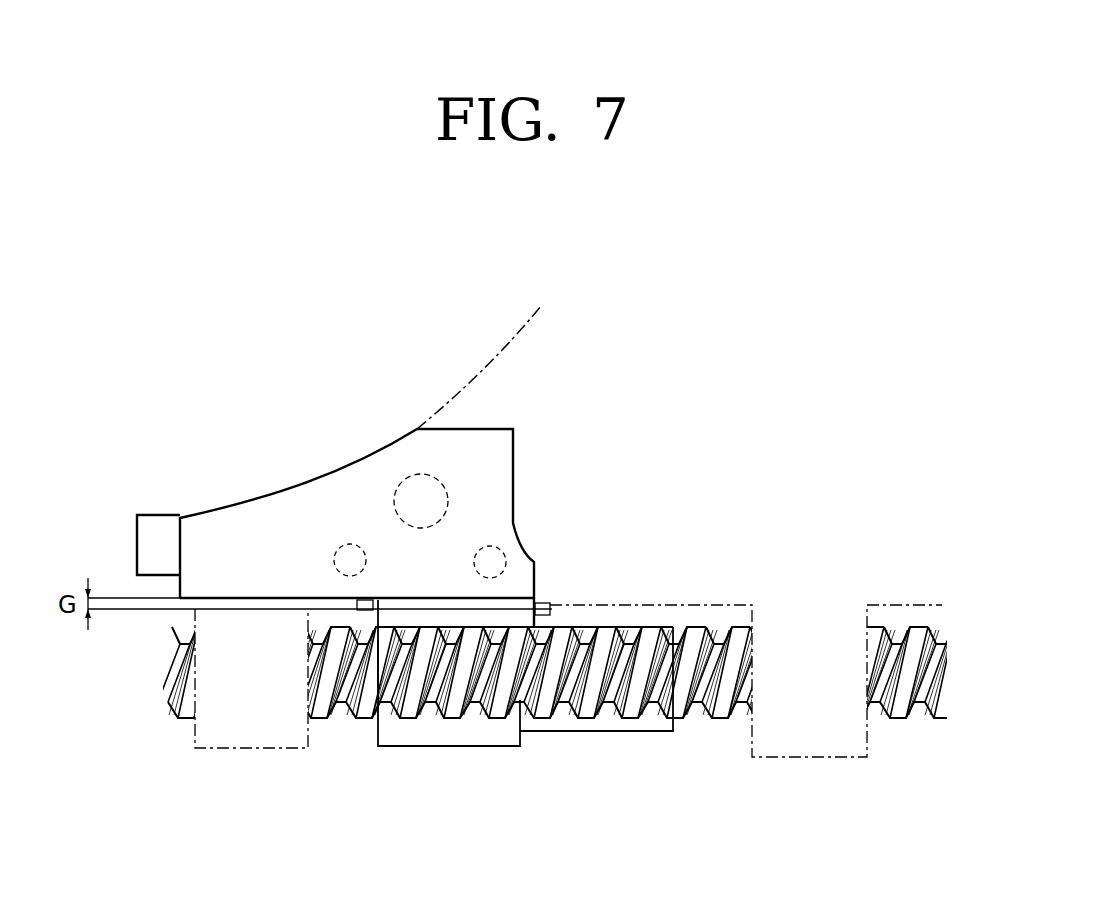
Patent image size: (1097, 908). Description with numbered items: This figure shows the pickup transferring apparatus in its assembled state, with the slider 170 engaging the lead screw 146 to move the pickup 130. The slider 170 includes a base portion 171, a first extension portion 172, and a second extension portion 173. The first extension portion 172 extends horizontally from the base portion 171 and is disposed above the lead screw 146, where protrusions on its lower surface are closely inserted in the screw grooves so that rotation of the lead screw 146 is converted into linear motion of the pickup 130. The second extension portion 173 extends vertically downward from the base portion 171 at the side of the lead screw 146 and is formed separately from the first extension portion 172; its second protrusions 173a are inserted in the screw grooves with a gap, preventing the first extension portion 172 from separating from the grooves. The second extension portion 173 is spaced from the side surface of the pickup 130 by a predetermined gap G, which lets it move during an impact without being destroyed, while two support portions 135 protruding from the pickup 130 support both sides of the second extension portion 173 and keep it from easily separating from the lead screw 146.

The pickup 130 is at (760, 569).
The support portions 135 is at (550, 605).
The lead screw 146 is at (713, 722).
The slider 170 is at (405, 561).
The base portion 171 is at (338, 490).
The first extension portion 172 is at (585, 732).
The second extension portion 173 is at (500, 614).
The second protrusions 173a is at (410, 623).